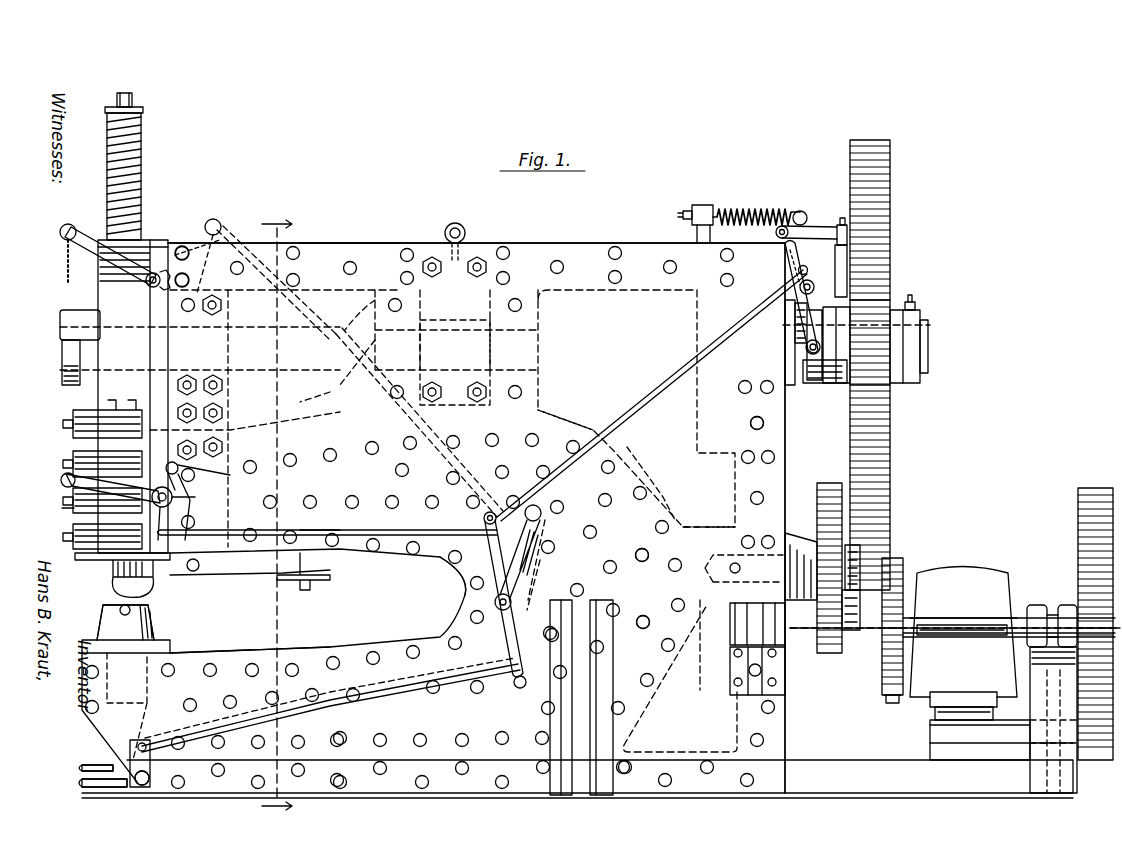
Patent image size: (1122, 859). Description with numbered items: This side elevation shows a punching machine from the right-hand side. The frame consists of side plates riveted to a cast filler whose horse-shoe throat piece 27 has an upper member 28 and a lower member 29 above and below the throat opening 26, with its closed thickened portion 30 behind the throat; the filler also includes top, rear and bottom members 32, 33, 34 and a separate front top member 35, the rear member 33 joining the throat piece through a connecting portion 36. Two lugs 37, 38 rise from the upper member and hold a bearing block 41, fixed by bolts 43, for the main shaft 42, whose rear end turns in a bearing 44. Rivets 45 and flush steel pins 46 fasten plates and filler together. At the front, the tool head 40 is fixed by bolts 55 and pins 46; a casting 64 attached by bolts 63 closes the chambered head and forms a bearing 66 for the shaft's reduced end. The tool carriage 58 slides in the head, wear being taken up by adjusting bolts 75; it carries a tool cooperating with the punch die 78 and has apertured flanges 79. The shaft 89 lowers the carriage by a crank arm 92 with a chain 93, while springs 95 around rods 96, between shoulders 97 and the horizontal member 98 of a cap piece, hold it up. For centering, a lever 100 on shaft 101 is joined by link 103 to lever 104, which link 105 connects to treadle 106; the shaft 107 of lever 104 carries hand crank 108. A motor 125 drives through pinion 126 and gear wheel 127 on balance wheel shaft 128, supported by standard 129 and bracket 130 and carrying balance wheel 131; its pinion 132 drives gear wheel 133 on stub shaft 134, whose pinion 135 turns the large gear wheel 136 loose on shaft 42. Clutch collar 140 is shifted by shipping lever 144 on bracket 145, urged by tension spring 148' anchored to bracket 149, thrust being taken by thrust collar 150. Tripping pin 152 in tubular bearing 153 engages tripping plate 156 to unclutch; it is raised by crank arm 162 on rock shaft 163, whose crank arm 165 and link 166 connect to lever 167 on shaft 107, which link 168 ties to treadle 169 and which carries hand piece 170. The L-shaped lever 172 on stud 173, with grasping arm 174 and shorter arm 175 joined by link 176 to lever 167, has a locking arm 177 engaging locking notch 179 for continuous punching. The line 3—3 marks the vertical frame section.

The line 3— 3 is at (277, 517).
The throat opening 26 is at (318, 601).
The throat piece 27 is at (548, 412).
The upper member of the throat piece 28 is at (318, 412).
The lower member of the throat piece 29 is at (318, 648).
The closed thickened portion of the throat piece 30 is at (661, 483).
The top member of the filler 32 is at (575, 243).
The rear member of the filler 33 is at (770, 437).
The bottom member of the filler 34 is at (681, 676).
The front top member of the filler 35 is at (320, 243).
The connecting portion 36 is at (701, 536).
The lug 37 is at (337, 351).
The lug 38 is at (548, 345).
The tool head 40 is at (80, 440).
The bearing block 41 is at (468, 240).
The main shaft 42 is at (928, 342).
The bolts 43 is at (477, 385).
The bearing 44 is at (785, 415).
The rivets 45 is at (296, 250).
The steel pins 46 is at (352, 266).
The bolts 55 is at (212, 378).
The tool carriage 58 is at (133, 396).
The bolts 63 is at (68, 490).
The casting 64 is at (80, 392).
The bearing 66 is at (75, 308).
The adjusting bolts 75 is at (118, 410).
The punch die 78 is at (100, 615).
The apertured flanges 79 is at (92, 563).
The carriage actuating shaft 89 is at (186, 248).
The crank arm 92 is at (72, 225).
The chain 93 is at (78, 267).
The spiral expansive springs 95 is at (142, 142).
The rods 96 is at (115, 106).
The shoulders 97 is at (133, 102).
The horizontal member of the cap piece 98 is at (152, 240).
The lever 100 is at (222, 222).
The horizontal shaft 101 is at (190, 280).
The link 103 is at (225, 228).
The lever 104 is at (548, 570).
The link 105 is at (448, 600).
The foot lever 106 is at (128, 700).
The shaft 107 is at (495, 602).
The hand crank 108 is at (540, 522).
The motor 125 is at (960, 575).
The pinion 126 is at (880, 660).
The gear wheel 127 is at (890, 697).
The balance wheel shaft 128 is at (958, 626).
The standard 129 is at (1045, 650).
The bracket 130 is at (775, 658).
The balance wheel 131 is at (1090, 488).
The pinion 132 is at (859, 610).
The gear wheel 133 is at (825, 485).
The stub shaft 134 is at (712, 615).
The pinion 135 is at (868, 560).
The large gear wheel 136 is at (892, 470).
The clutch collar 140 is at (862, 392).
The shipping lever 144 is at (828, 300).
The bracket 145 is at (805, 290).
The tension spring 148' is at (760, 196).
The bracket 149 is at (697, 222).
The thrust collar 150 is at (922, 375).
The tripping pin 152 is at (845, 225).
The tubular bearing 153 is at (885, 210).
The tripping plate 156 is at (895, 296).
The crank arm 162 is at (830, 228).
The rock shaft 163 is at (775, 232).
The crank arm 165 is at (790, 262).
The link 166 is at (645, 398).
The lever 167 is at (508, 636).
The link 168 is at (410, 692).
The foot lever 169 is at (103, 787).
The hand piece 170 is at (485, 522).
The L-shaped lever 172 is at (195, 494).
The stud 173 is at (172, 464).
The arm 174 is at (72, 512).
The shorter arm 175 is at (200, 531).
The link 176 is at (318, 528).
The locking arm 177 is at (178, 465).
The locking notch 179 is at (200, 410).